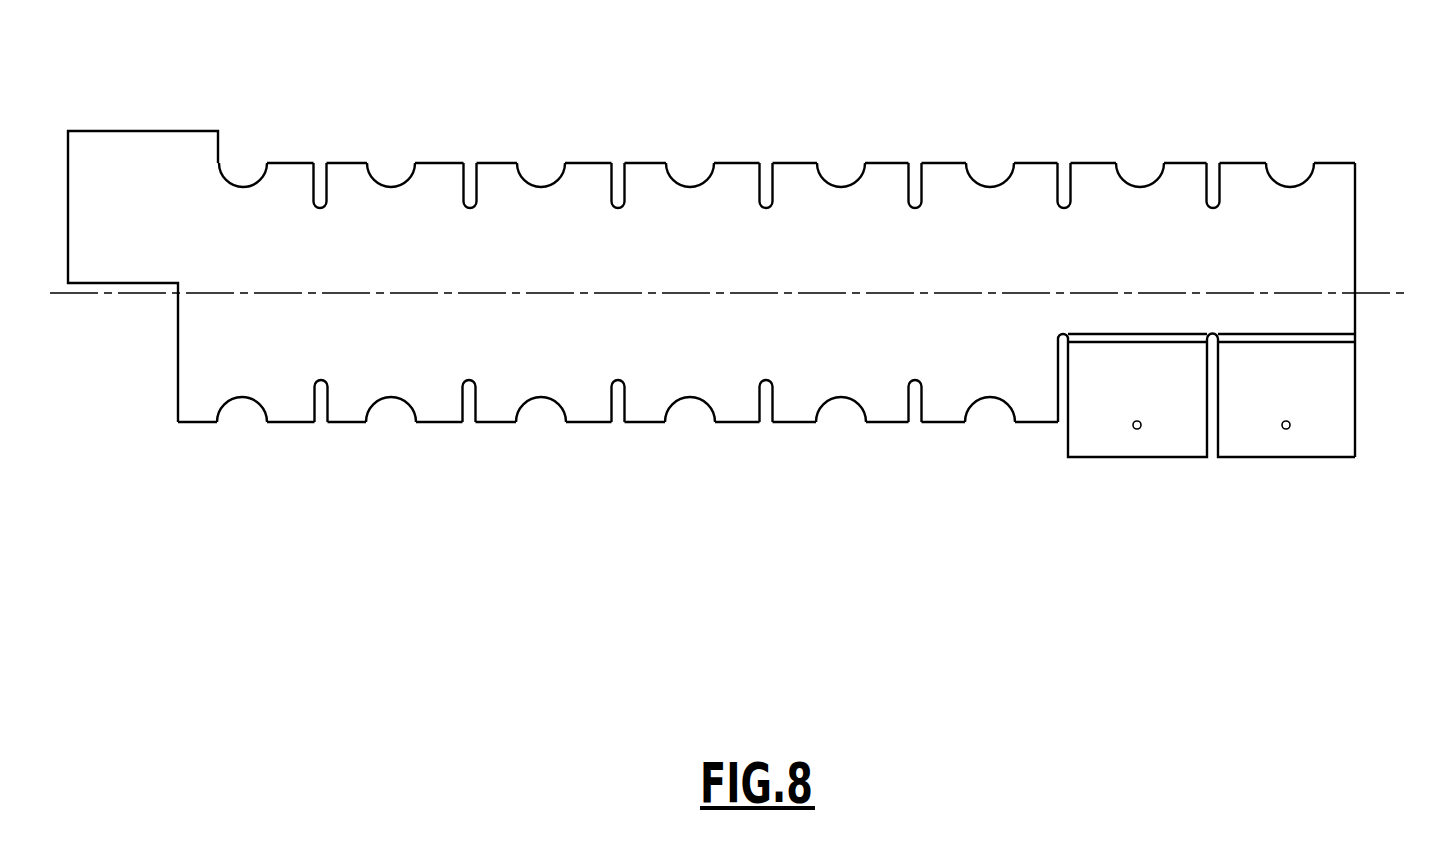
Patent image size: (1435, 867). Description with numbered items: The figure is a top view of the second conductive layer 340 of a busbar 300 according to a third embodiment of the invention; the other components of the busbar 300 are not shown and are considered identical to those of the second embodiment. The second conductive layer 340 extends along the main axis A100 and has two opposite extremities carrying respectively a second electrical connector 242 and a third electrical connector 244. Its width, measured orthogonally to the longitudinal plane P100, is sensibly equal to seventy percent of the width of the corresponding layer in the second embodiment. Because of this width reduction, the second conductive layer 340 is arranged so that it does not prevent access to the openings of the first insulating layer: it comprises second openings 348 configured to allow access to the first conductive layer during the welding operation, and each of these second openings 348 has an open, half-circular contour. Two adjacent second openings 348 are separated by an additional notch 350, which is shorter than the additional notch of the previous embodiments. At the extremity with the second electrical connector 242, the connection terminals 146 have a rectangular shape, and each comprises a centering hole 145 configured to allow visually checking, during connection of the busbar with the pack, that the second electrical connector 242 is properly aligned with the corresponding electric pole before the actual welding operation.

The busbar 300 is at (1268, 53).
The third electrical connector 244 is at (97, 230).
The second conductive layer 340 is at (1333, 177).
The second openings 348 is at (689, 398).
The additional notch 350 is at (323, 157).
The second electrical connector 242 is at (1317, 546).
The connection terminal 146 is at (1160, 437).
The centering hole 145 is at (1150, 423).
The main axis A100 is at (734, 276).
The longitudinal plane P100 is at (734, 310).